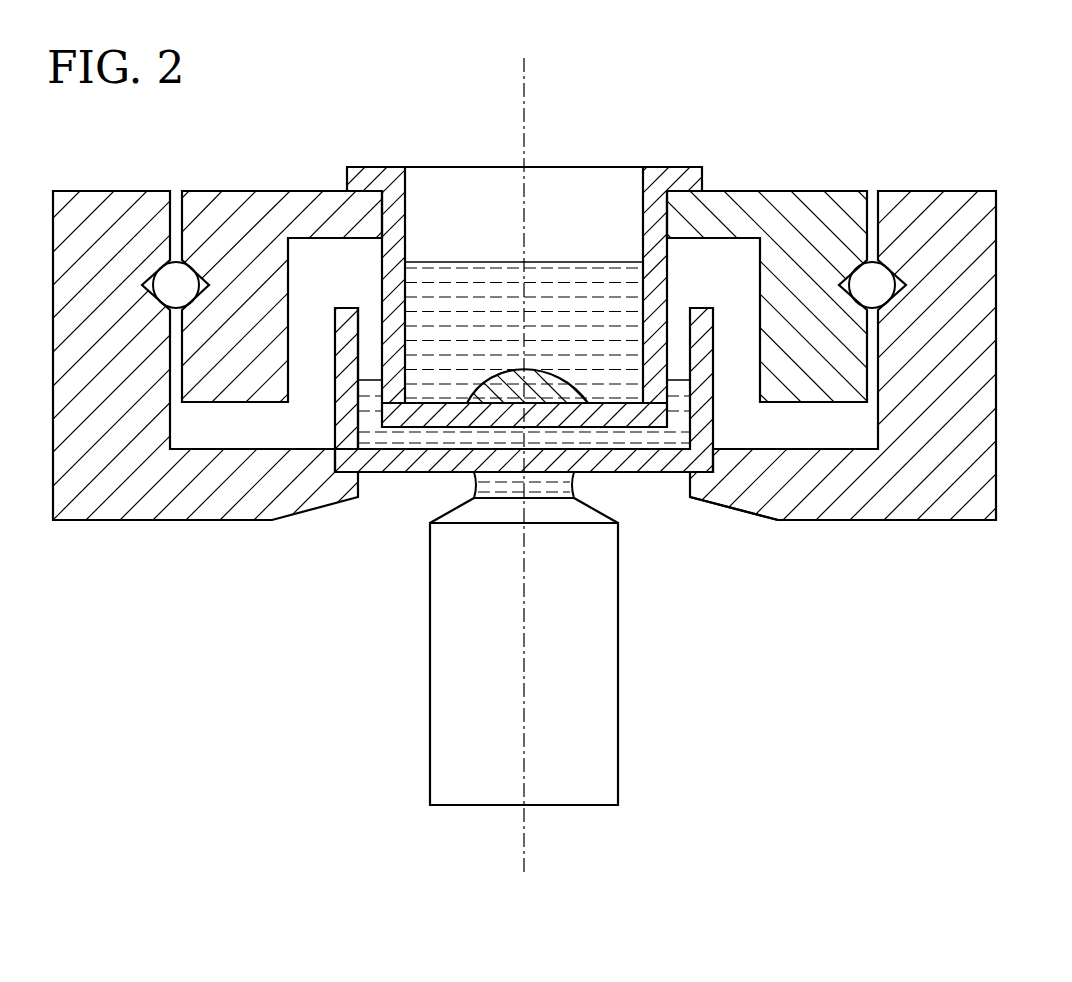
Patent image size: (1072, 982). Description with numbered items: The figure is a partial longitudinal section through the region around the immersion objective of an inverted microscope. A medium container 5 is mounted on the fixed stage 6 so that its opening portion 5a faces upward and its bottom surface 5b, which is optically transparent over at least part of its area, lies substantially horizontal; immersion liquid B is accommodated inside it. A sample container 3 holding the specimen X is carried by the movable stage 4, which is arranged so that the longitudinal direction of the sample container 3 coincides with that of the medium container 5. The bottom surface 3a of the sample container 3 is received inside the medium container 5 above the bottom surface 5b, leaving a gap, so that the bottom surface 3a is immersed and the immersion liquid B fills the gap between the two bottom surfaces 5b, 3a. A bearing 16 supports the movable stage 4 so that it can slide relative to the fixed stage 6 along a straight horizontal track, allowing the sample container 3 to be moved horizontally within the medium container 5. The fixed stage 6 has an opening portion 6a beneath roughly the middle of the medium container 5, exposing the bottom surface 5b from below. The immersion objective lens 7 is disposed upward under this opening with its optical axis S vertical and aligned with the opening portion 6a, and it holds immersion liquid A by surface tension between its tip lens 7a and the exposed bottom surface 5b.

The sample container 3 is at (670, 158).
The bottom surface of sample container 3a is at (632, 430).
The movable stage 4 is at (810, 190).
The medium container 5 is at (373, 487).
The opening portion of medium container 5a is at (372, 315).
The bottom surface of medium container 5b is at (397, 442).
The fixed stage 6 is at (143, 533).
The opening portion of fixed stage 6a is at (688, 499).
The immersion objective lens 7 is at (632, 790).
The tip lens 7a is at (577, 497).
The bearing 16 is at (877, 287).
The immersion liquid (first immersion medium) A is at (574, 480).
The immersion liquid (second immersion medium) B is at (676, 378).
The specimen X is at (506, 362).
The optical axis S is at (527, 83).